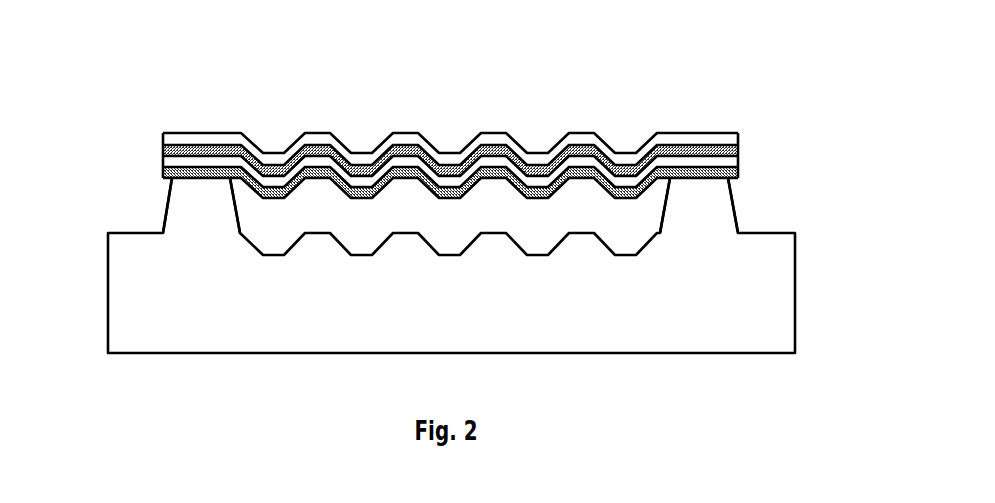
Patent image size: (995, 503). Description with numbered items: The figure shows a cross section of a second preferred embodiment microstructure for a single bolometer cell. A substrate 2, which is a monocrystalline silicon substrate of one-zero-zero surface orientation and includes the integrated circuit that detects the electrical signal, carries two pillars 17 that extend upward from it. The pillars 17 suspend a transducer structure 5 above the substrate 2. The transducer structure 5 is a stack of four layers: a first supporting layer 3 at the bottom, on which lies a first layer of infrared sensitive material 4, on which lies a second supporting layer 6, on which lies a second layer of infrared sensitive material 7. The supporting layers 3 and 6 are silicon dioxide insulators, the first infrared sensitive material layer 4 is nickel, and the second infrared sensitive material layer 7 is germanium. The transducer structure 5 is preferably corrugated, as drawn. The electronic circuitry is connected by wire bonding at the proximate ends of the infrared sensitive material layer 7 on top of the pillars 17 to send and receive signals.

The substrate 2 is at (778, 294).
The pillars 17 is at (185, 210).
The transducer structure 5 is at (209, 98).
The second layer of infrared sensitive material 7 is at (726, 137).
The second supporting layer 6 is at (732, 147).
The first layer of infrared sensitive material 4 is at (732, 158).
The first supporting layer 3 is at (740, 170).